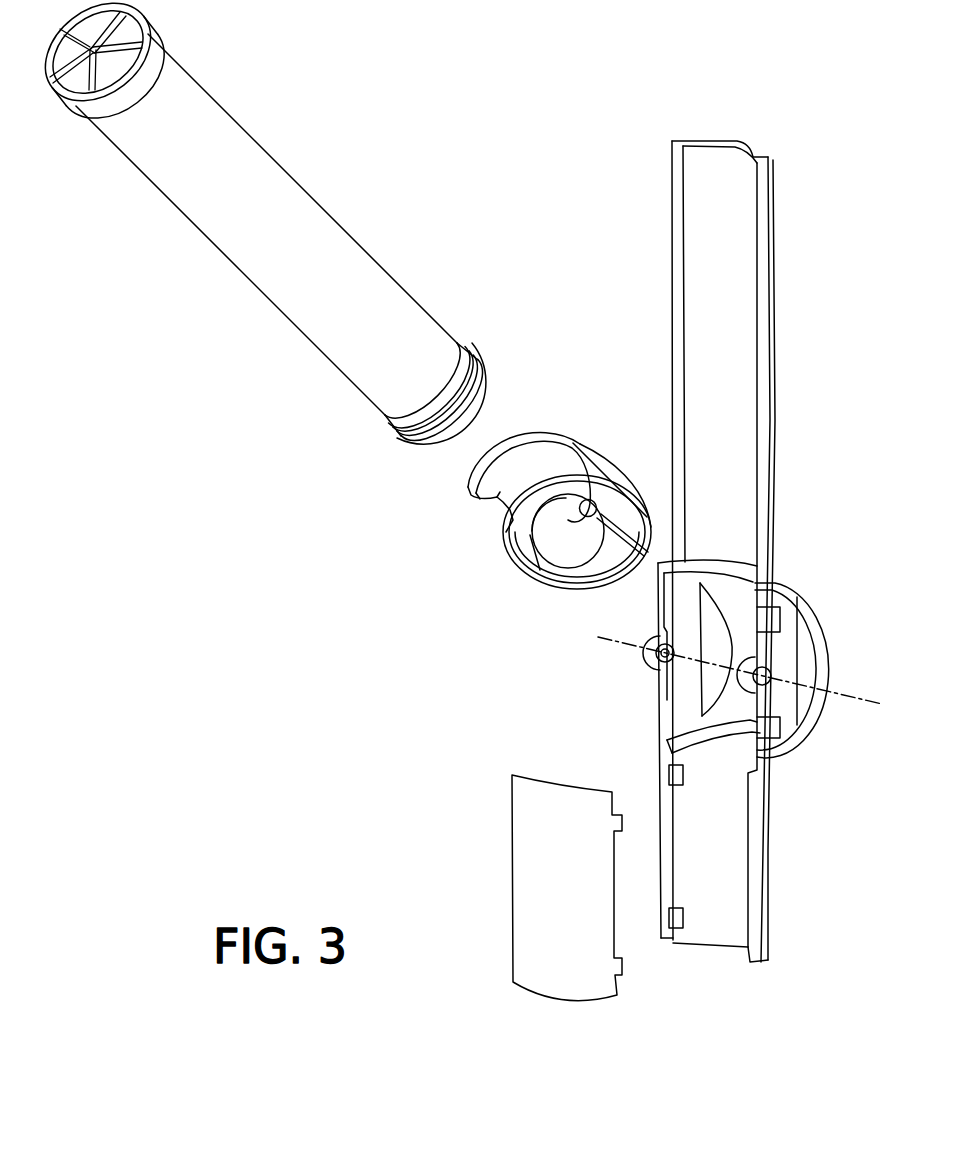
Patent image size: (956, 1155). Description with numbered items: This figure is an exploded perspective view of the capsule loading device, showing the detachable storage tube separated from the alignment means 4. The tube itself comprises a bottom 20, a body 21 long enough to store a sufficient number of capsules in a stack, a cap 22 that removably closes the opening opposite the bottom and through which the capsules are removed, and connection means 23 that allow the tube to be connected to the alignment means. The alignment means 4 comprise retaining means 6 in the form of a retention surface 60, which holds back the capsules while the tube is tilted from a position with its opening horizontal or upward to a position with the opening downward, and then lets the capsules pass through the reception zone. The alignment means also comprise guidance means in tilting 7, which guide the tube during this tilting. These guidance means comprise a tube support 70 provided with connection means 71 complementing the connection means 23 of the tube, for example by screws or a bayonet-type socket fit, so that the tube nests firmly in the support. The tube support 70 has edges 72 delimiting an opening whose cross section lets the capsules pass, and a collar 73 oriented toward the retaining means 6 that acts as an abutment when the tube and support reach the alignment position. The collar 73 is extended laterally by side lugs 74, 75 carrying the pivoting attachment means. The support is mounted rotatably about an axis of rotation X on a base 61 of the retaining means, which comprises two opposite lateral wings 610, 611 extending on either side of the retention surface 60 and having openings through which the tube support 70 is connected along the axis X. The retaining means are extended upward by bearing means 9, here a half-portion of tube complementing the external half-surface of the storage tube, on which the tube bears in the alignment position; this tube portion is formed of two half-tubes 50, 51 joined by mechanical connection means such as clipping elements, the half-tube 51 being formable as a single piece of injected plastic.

The alignment means 4 is at (280, 565).
The retaining means 6 is at (726, 776).
The guidance means in tilting 7 is at (497, 600).
The bearing means 9 is at (782, 290).
The bottom 20 is at (66, 92).
The body 21 is at (352, 254).
The cap 22 is at (487, 382).
The connection means 23 is at (405, 432).
The half-tube 50 is at (513, 892).
The half-tube 51 is at (705, 942).
The retention surface 60 is at (815, 652).
The base 61 is at (672, 636).
The tube support 70 is at (530, 520).
The connection means 71 is at (513, 557).
The edges 72 is at (583, 588).
The collar 73 is at (548, 442).
The side lug 74 is at (580, 448).
The side lug 75 is at (482, 523).
The lateral wing 610 is at (770, 742).
The lateral wing 611 is at (652, 655).
The axis of rotation X is at (853, 702).